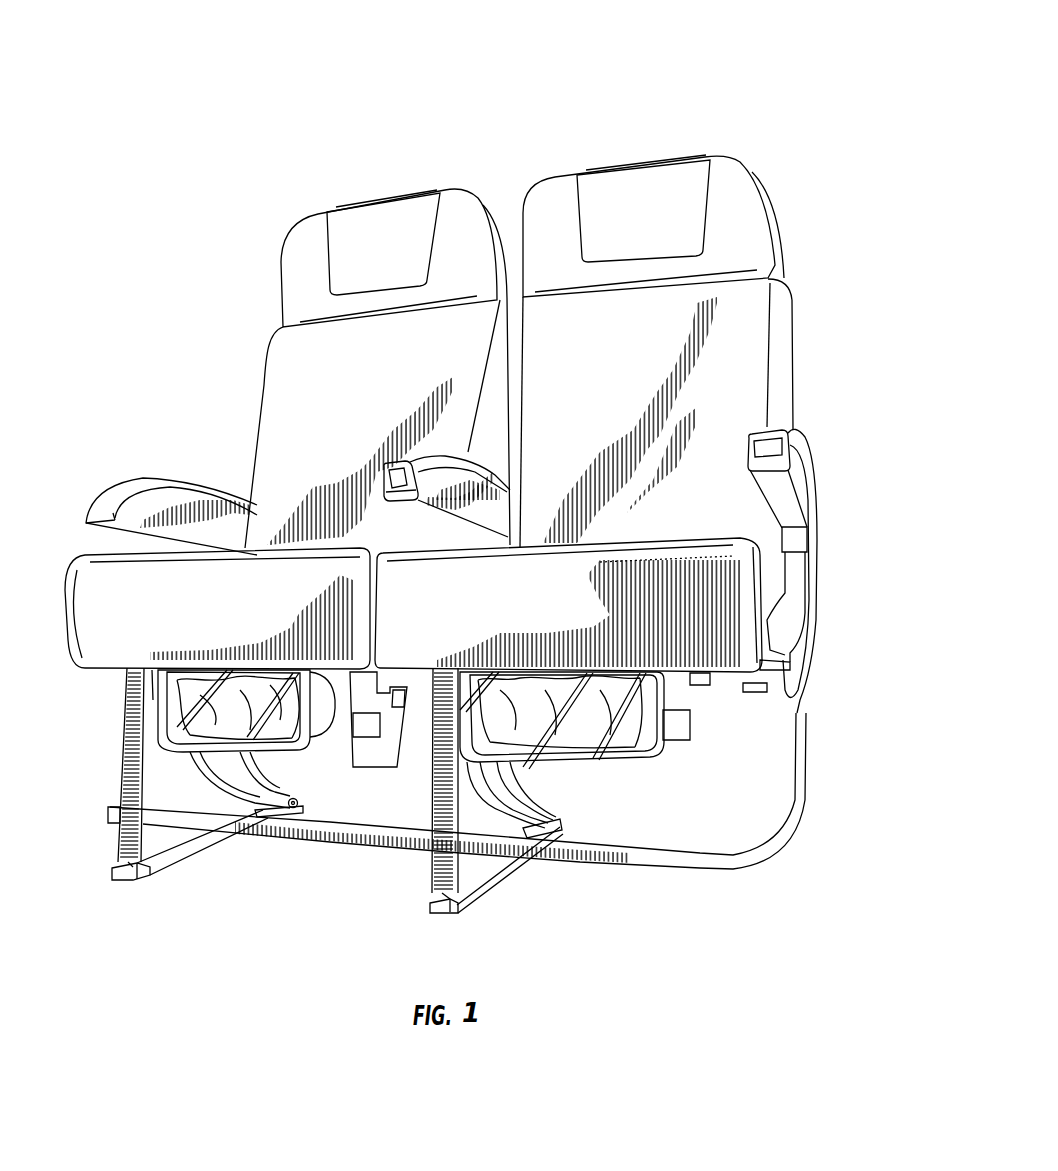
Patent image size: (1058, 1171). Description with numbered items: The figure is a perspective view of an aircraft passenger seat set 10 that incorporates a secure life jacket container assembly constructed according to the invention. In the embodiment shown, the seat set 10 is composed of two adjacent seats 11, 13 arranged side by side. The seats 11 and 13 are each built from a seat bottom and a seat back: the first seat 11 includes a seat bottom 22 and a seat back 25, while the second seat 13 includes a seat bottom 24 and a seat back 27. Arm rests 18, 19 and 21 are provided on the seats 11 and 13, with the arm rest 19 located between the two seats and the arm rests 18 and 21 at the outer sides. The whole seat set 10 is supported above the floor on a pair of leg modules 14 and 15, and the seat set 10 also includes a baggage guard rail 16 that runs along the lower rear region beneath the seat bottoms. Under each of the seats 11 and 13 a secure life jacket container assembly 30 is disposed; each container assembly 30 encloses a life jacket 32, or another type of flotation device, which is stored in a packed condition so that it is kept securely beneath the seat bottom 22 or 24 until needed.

The seat set 10 is at (576, 108).
The seat 11 is at (205, 312).
The seat 13 is at (803, 320).
The leg module 14 is at (122, 757).
The leg module 15 is at (430, 867).
The baggage guard rail 16 is at (627, 860).
The arm rest 18 is at (122, 487).
The arm rest 19 is at (398, 464).
The arm rest 21 is at (793, 433).
The seat bottom 22 is at (226, 628).
The seat bottom 24 is at (518, 616).
The seat back 25 is at (287, 247).
The seat back 27 is at (743, 156).
The life jacket container assembly 30 is at (335, 770).
The life jacket 32 is at (280, 755).